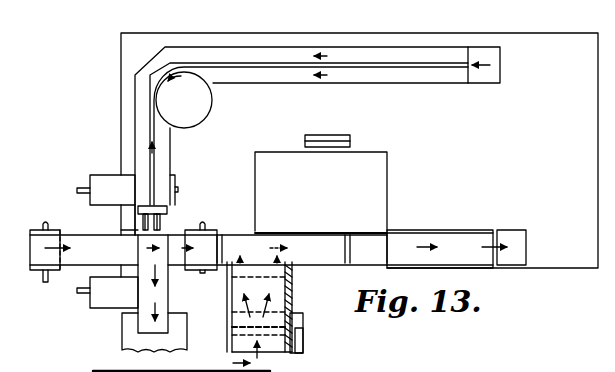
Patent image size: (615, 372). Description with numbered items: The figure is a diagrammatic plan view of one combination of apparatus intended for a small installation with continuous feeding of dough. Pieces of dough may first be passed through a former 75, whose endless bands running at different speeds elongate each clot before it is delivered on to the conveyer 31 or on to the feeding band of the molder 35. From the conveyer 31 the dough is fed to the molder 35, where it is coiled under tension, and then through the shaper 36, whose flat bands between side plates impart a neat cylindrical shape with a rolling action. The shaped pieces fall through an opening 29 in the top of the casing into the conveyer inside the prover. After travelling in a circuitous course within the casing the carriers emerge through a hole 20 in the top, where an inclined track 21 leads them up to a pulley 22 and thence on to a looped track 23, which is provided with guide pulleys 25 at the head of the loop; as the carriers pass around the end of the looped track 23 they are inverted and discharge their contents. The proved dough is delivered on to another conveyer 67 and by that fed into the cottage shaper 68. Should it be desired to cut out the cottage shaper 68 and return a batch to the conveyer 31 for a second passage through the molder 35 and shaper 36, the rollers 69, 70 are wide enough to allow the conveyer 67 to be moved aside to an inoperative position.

The hole 20 is at (487, 73).
The inclined track 21 is at (373, 78).
The pulley 22 is at (184, 100).
The looped track 23 is at (165, 187).
The guide pulleys 25 is at (148, 227).
The opening 29 is at (515, 242).
The conveyer 31 is at (72, 233).
The molder 35 is at (321, 184).
The shaper 36 is at (428, 232).
The conveyer 67 is at (163, 292).
The cottage shaper 68 is at (172, 338).
The roller 69 is at (107, 180).
The roller 70 is at (103, 293).
The former 75 is at (269, 309).